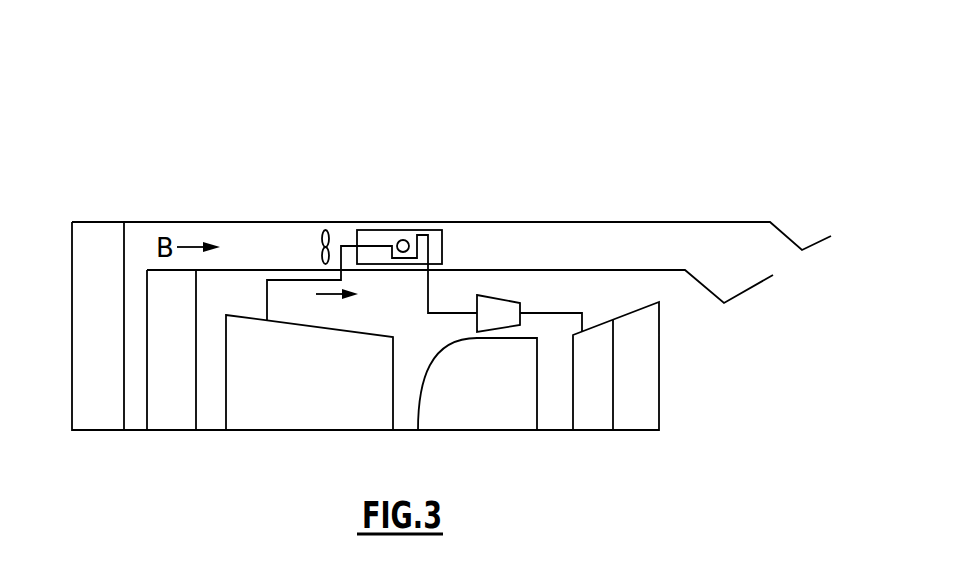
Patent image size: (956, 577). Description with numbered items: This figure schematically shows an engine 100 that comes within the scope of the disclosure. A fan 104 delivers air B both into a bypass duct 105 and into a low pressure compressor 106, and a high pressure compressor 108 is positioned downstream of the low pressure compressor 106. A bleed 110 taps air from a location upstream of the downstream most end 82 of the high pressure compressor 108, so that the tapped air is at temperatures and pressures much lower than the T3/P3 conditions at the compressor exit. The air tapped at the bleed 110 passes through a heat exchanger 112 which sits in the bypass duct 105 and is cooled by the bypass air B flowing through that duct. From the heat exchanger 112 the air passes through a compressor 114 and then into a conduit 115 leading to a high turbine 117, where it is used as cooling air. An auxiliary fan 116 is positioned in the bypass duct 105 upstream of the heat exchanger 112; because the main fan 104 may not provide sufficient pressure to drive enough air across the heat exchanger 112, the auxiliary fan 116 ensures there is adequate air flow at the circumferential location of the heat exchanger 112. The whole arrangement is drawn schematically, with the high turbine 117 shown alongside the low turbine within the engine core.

The engine 100 is at (370, 153).
The fan 104 is at (103, 243).
The bypass duct 105 is at (245, 245).
The low pressure compressor 106 is at (173, 415).
The high pressure compressor 108 is at (268, 417).
The downstream most end 82 is at (393, 336).
The bleed 110 is at (267, 303).
The heat exchanger 112 is at (401, 230).
The compressor 114 is at (490, 295).
The conduit 115 is at (557, 313).
The auxiliary fan 116 is at (323, 230).
The high turbine 117 is at (597, 416).